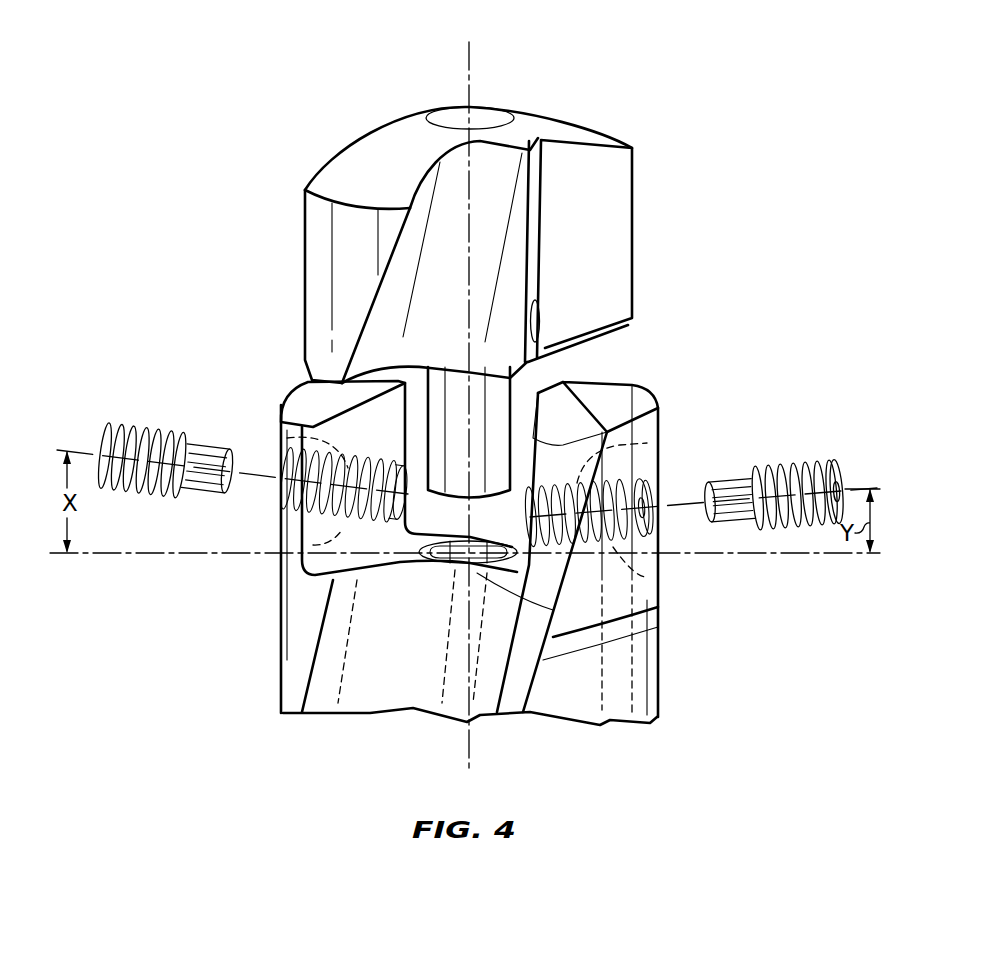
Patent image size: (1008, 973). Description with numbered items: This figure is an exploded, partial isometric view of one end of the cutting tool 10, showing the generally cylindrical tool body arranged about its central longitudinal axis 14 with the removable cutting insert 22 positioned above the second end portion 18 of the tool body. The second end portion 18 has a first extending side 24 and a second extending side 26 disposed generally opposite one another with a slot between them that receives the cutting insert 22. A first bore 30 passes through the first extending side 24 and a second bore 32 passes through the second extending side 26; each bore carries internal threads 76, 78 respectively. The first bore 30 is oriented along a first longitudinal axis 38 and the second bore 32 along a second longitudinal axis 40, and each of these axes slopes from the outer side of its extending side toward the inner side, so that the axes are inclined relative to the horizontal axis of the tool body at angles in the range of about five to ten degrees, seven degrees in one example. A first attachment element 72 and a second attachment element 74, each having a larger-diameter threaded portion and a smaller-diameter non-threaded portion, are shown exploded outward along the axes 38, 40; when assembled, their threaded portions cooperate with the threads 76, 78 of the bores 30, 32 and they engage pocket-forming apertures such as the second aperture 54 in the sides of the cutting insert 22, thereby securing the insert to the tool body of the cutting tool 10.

The cutting tool 10 is at (693, 262).
The central longitudinal axis 14 is at (469, 60).
The second end portion 18 is at (645, 667).
The cutting insert 22 is at (250, 277).
The first extending side 24 is at (292, 420).
The second extending side 26 is at (597, 417).
The first bore 30 is at (328, 527).
The second bore 32 is at (615, 552).
The first longitudinal axis 38 is at (68, 450).
The second longitudinal axis 40 is at (855, 488).
The second aperture 54 is at (541, 320).
The first attachment element 72 is at (127, 500).
The second attachment element 74 is at (803, 532).
The threads 76 is at (287, 438).
The threads 78 is at (647, 443).